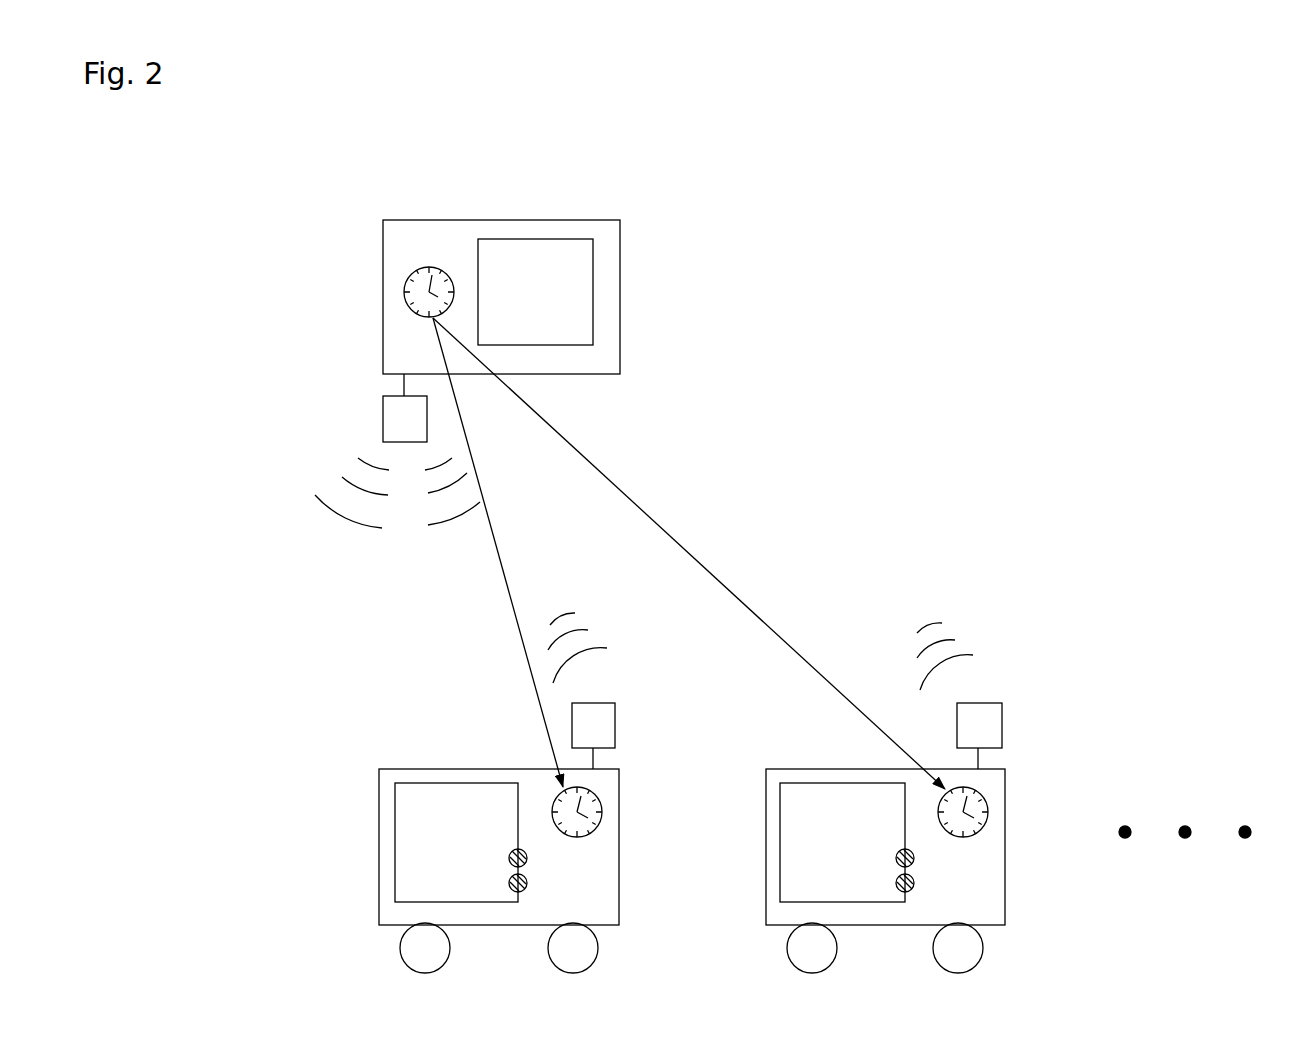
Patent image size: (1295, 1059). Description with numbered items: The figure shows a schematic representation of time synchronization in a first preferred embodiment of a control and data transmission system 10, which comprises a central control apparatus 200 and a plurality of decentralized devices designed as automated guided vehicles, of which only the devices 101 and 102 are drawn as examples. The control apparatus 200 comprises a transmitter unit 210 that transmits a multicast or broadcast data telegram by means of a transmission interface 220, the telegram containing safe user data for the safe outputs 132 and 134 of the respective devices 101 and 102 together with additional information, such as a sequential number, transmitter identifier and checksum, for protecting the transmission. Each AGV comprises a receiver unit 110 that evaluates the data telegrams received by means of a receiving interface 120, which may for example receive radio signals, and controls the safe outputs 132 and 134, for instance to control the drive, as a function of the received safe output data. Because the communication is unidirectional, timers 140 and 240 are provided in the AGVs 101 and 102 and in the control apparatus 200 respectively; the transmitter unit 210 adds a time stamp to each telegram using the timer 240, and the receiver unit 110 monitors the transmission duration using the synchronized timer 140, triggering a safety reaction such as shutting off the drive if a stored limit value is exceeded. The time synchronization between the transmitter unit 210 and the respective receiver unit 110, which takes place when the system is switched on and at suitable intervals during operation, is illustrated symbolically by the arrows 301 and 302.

The control and data transmission system 10 is at (868, 235).
The central control apparatus 200 is at (620, 330).
The transmitter unit 210 is at (593, 247).
The transmission interface 220 is at (383, 421).
The timer 240 is at (410, 273).
The arrow 301 is at (502, 565).
The arrow 302 is at (672, 538).
The decentralized device 101 is at (379, 860).
The decentralized device 102 is at (1005, 887).
The receiver unit 110 is at (410, 783).
The receiving interface 120 is at (615, 730).
The safe output 132 is at (527, 860).
The safe output 134 is at (527, 885).
The timer 140 is at (600, 822).